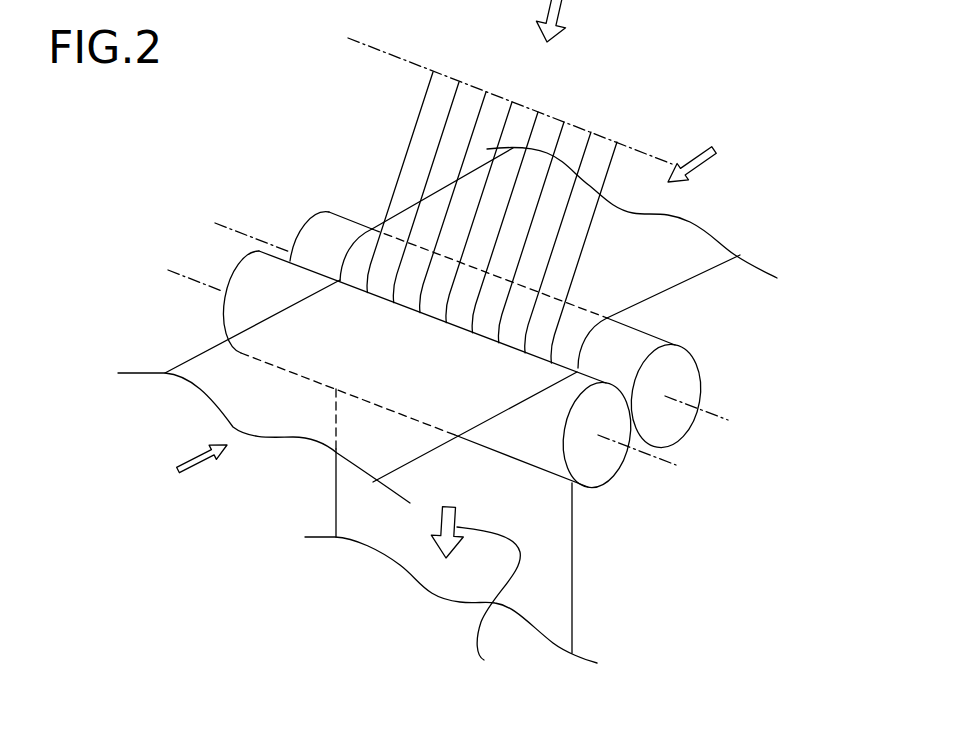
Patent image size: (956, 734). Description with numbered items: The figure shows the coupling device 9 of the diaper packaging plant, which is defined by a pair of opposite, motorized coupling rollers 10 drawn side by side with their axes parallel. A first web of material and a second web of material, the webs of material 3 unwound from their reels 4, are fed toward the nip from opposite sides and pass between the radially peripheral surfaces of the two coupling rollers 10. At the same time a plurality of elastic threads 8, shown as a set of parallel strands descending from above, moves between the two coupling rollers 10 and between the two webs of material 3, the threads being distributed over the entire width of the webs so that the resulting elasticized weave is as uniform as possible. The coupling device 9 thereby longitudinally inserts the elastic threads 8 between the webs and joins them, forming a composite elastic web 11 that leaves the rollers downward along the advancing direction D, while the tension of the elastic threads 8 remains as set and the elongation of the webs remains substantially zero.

The webs of material 3 is at (230, 375).
The reels 4 is at (658, 264).
The elastic threads 8 is at (513, 150).
The coupling device 9 is at (702, 457).
The coupling rollers 10 is at (700, 377).
The composite elastic web 11 is at (545, 602).